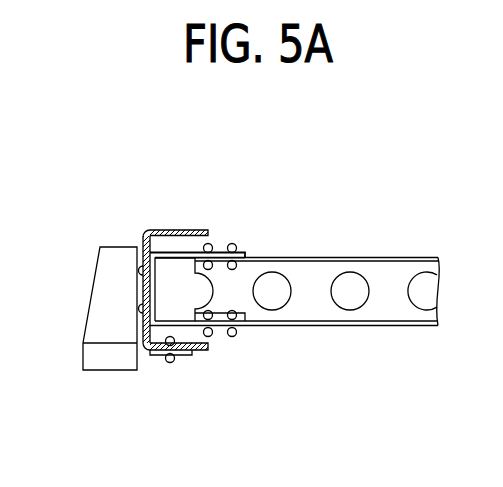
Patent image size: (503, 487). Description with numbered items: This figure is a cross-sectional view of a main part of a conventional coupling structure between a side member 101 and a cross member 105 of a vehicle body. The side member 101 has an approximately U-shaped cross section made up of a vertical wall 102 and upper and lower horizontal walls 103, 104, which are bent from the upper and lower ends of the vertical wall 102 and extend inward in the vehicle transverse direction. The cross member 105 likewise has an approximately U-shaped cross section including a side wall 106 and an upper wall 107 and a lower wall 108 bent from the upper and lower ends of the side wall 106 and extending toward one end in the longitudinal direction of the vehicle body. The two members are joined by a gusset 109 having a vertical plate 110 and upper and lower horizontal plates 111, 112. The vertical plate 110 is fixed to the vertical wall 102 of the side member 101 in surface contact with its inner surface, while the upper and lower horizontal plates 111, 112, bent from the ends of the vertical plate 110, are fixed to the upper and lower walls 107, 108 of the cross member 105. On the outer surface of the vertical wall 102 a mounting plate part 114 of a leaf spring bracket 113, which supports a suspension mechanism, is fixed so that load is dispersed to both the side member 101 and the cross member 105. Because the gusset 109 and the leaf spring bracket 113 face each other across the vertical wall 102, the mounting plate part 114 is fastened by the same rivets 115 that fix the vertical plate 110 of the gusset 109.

The side member 101 is at (144, 220).
The vertical wall 102 is at (166, 229).
The upper horizontal wall 103 is at (200, 232).
The lower horizontal wall 104 is at (200, 352).
The cross member 105 is at (413, 252).
The side wall 106 is at (392, 308).
The upper wall 107 is at (389, 257).
The lower wall 108 is at (365, 327).
The gusset 109 is at (253, 243).
The vertical plate 110 is at (213, 245).
The upper horizontal plate 111 is at (226, 244).
The lower horizontal plate 112 is at (237, 334).
The leaf spring bracket 113 is at (92, 263).
The mounting plate part 114 is at (140, 236).
The rivets 115 is at (136, 271).